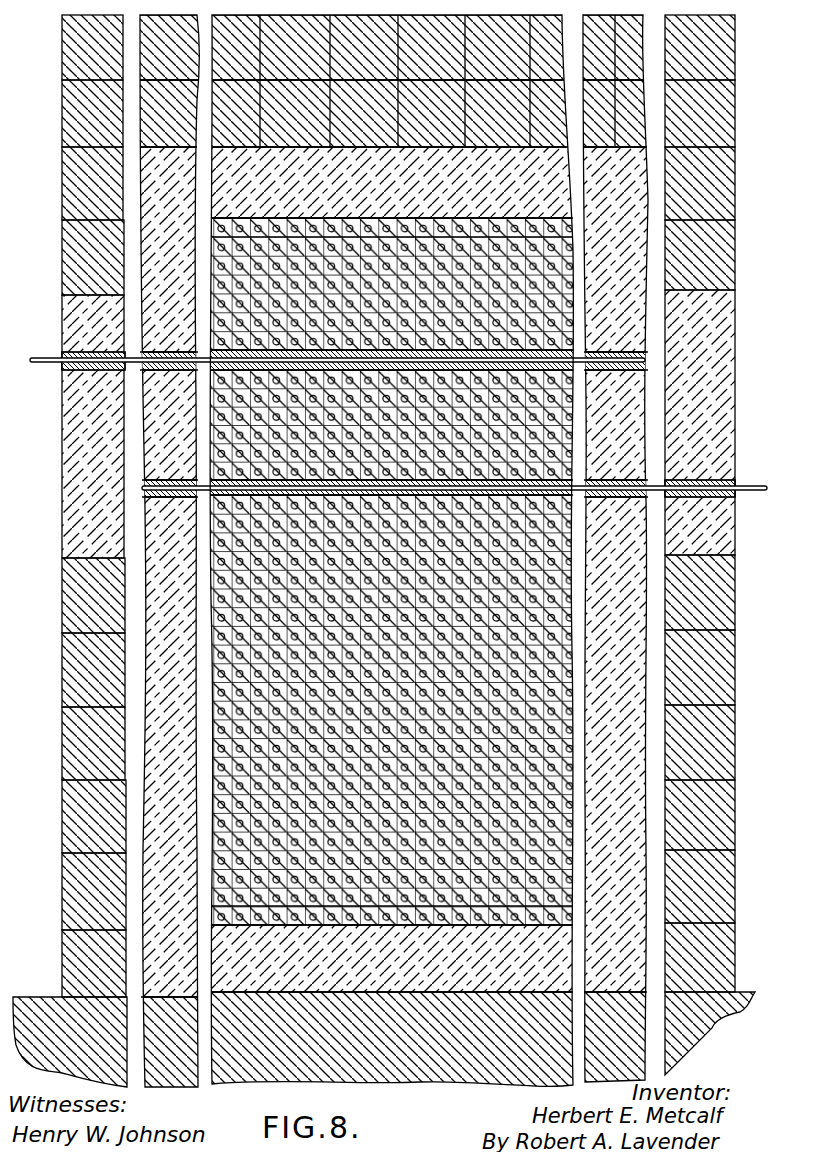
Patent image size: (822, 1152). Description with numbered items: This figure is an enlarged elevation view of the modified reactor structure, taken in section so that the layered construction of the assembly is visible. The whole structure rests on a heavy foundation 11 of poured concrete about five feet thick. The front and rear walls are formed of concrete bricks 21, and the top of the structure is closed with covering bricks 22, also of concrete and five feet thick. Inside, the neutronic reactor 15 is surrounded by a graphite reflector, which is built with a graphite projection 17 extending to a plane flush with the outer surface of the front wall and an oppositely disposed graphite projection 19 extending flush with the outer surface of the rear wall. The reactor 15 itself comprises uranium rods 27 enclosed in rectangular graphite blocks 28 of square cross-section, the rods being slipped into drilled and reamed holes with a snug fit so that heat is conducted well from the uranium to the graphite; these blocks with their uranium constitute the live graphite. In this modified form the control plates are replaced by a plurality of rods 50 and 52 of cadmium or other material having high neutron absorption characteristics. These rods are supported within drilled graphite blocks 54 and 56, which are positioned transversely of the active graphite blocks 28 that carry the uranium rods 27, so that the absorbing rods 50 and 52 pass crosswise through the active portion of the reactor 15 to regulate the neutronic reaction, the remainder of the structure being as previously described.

The foundation 11 is at (452, 1062).
The neutronic reactor 15 is at (278, 776).
The graphite projection 17 is at (712, 320).
The graphite projection 19 is at (63, 456).
The concrete bricks 21 is at (75, 680).
The covering bricks 22 is at (300, 54).
The uranium rods 27 is at (498, 218).
The graphite blocks 28 is at (436, 218).
The rods 50 is at (750, 491).
The rods 52 is at (46, 362).
The graphite block 54 is at (208, 498).
The graphite block 56 is at (82, 352).